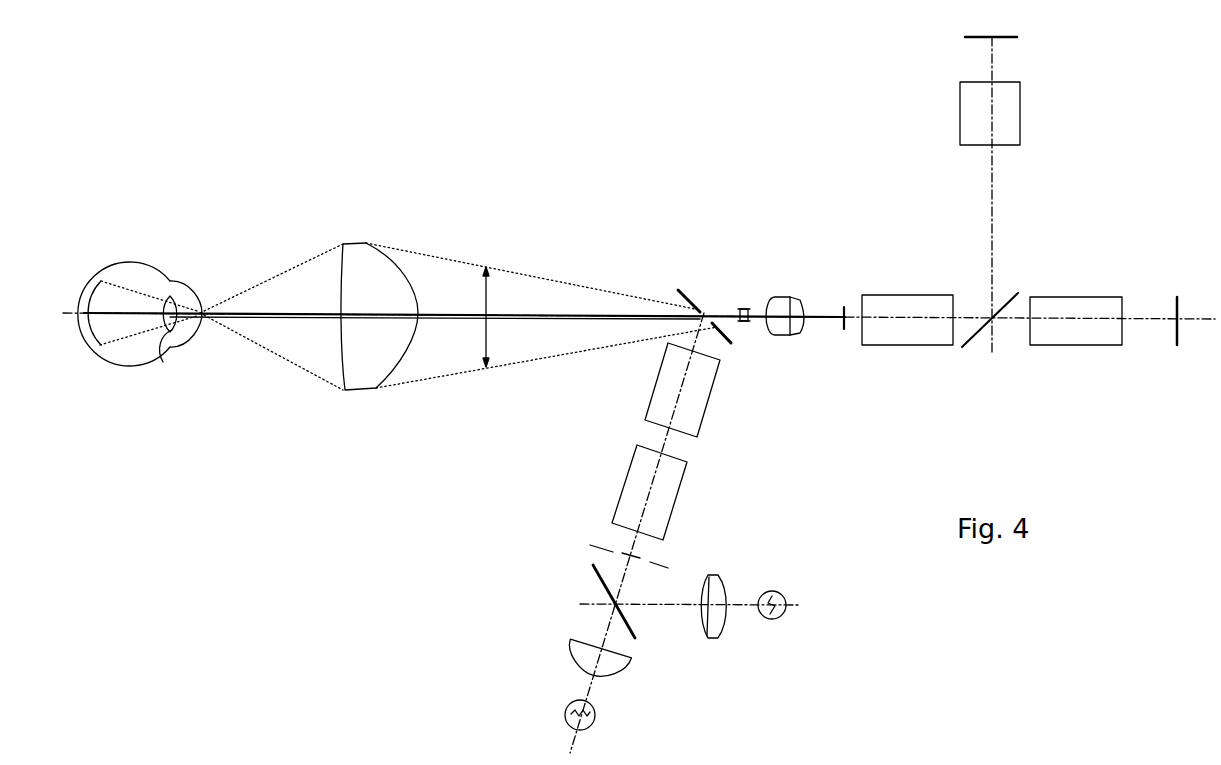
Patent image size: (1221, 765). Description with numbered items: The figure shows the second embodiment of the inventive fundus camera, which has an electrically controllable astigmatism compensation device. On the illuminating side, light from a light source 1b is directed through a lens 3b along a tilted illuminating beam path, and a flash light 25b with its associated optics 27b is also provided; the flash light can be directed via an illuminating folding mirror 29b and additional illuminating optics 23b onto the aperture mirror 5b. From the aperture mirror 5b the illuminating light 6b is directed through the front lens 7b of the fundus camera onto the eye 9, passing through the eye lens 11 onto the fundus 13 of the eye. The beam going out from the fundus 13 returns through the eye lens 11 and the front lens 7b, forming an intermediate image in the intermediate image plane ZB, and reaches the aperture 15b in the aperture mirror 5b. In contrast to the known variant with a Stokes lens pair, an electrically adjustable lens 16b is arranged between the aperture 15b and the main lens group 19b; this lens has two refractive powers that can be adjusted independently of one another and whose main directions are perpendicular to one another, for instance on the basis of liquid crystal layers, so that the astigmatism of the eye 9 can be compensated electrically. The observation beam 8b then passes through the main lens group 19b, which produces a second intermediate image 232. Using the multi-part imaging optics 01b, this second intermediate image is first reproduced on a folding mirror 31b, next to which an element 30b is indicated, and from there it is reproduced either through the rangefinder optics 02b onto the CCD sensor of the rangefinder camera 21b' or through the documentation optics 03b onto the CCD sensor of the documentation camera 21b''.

The eye 9 is at (130, 365).
The fundus of the eye 13 is at (83, 338).
The eye lens 11 is at (165, 334).
The observation beam 8b is at (262, 318).
The illuminating light 6b is at (435, 257).
The front lens 7b is at (352, 393).
The intermediate image plane ZB is at (487, 368).
The aperture mirror 5b is at (687, 290).
The aperture 15b is at (703, 310).
The electrically adjustable lens 16b is at (745, 300).
The main lens group 19b is at (783, 337).
The second intermediate image 232 is at (845, 305).
The multi-part imaging optics 01b is at (950, 339).
The rangefinder optics 02b is at (1000, 108).
The documentation optics 03b is at (1120, 339).
The rangefinder camera 21b' is at (1040, 59).
The documentation camera 21b'' is at (1163, 363).
The folding mirror 31b is at (1012, 293).
The optical axis 30b is at (1013, 320).
The additional illuminating optics 23b is at (651, 398).
The illuminating folding mirror 29b is at (593, 575).
The flash light optics 27b is at (717, 577).
The flash light 25b is at (787, 597).
The lens 3b is at (570, 645).
The light source 1b is at (565, 713).